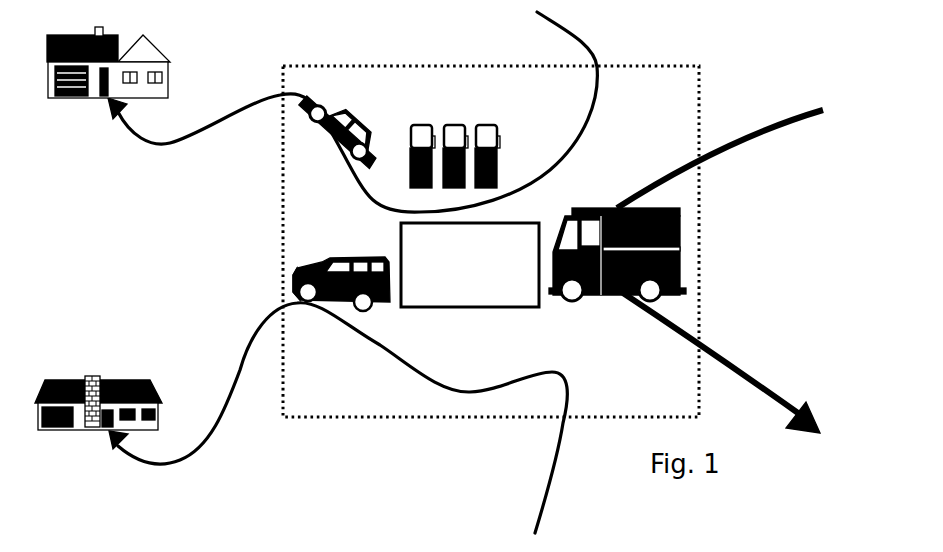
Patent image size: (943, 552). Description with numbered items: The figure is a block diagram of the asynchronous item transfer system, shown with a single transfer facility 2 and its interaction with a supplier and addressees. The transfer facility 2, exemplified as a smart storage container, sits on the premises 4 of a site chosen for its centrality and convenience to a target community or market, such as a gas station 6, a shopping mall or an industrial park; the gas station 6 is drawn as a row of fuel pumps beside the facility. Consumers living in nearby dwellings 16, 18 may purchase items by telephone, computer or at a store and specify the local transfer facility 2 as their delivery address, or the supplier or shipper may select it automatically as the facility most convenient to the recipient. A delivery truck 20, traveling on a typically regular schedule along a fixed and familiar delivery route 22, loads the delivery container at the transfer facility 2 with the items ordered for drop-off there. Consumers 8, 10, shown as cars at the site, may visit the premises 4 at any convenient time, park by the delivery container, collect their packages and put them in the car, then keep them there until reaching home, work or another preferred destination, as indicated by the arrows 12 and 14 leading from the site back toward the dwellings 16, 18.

The transfer facility 2 is at (432, 308).
The premises 4 is at (293, 278).
The gas station 6 is at (458, 125).
The consumer 8 is at (377, 122).
The consumer 10 is at (318, 266).
The arrow 12 is at (158, 42).
The arrow 14 is at (173, 237).
The dwelling 16 is at (72, 100).
The dwelling 18 is at (80, 377).
The delivery truck 20 is at (593, 294).
The delivery route 22 is at (763, 133).